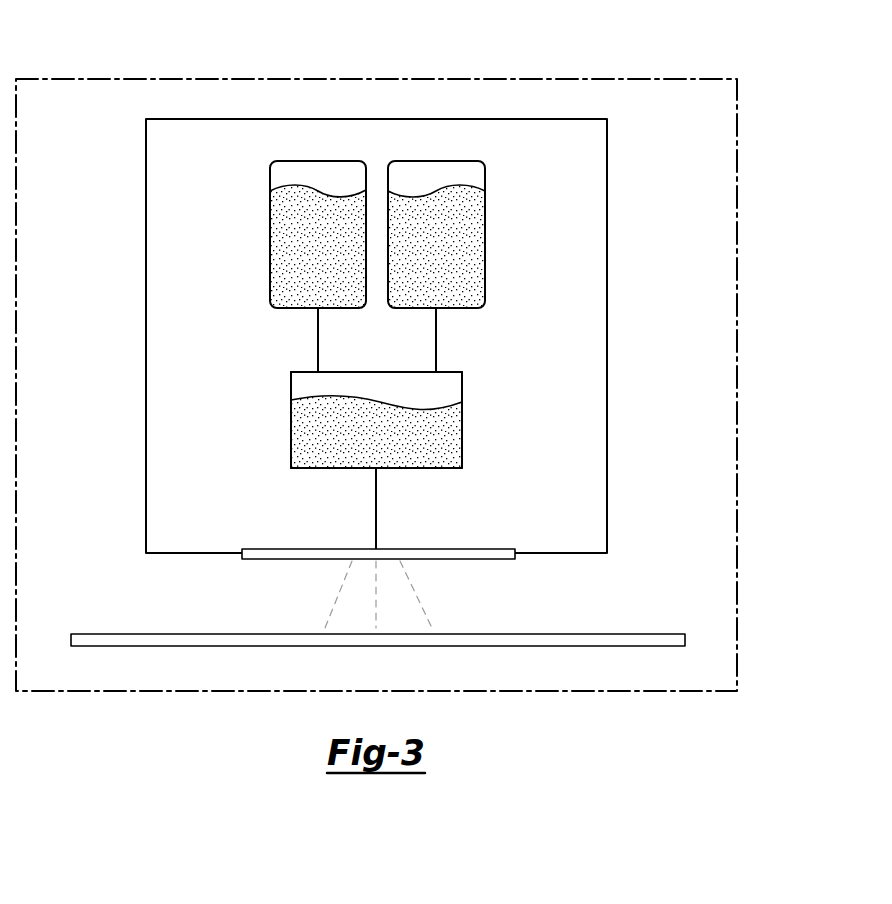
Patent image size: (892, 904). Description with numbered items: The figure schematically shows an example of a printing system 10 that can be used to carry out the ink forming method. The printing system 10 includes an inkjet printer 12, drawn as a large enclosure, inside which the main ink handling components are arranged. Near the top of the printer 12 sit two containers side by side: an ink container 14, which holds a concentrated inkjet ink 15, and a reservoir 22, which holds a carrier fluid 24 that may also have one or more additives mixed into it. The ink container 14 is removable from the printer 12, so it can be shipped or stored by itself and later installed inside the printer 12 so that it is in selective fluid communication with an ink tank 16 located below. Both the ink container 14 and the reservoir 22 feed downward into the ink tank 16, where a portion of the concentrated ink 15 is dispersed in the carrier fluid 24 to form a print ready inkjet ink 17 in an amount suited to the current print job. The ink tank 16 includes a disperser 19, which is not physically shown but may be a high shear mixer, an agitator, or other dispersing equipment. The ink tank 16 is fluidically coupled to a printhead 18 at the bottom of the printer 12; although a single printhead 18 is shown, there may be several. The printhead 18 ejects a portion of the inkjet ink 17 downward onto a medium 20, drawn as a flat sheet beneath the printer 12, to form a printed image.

The printing system 10 is at (686, 58).
The inkjet printer 12 is at (146, 182).
The ink container 14 is at (270, 182).
The concentrated inkjet ink 15 is at (290, 259).
The ink tank 16 is at (291, 391).
The print ready inkjet ink 17 is at (315, 445).
The printhead 18 is at (302, 556).
The disperser 19 is at (376, 420).
The medium 20 is at (302, 645).
The reservoir 22 is at (485, 180).
The carrier fluid 24 is at (465, 260).